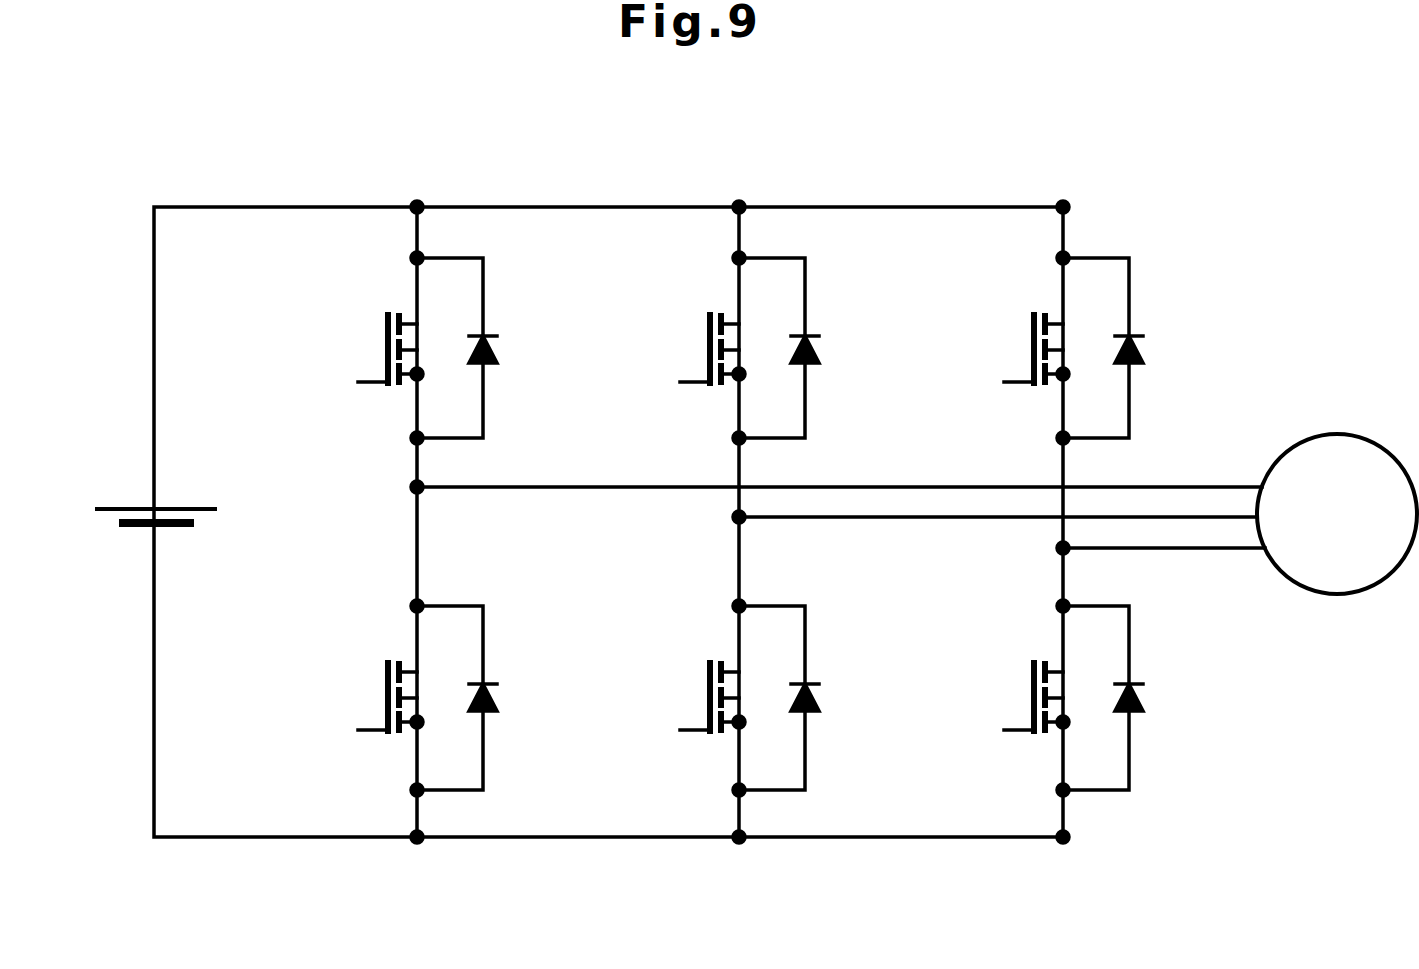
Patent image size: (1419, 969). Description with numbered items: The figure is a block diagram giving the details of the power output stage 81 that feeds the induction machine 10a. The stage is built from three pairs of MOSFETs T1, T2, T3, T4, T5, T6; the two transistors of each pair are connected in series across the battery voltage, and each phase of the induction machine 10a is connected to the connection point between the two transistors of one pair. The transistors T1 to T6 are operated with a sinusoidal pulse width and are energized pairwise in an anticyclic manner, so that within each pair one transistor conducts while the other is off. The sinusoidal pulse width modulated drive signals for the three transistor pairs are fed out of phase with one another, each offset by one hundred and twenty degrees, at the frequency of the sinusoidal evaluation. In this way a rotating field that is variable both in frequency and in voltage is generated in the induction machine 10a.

The power output stage 81 is at (681, 464).
The induction machine 10a is at (1305, 600).
The MOSFET T1 is at (416, 348).
The MOSFET T2 is at (416, 698).
The MOSFET T3 is at (738, 348).
The MOSFET T4 is at (738, 698).
The MOSFET T5 is at (1062, 348).
The MOSFET T6 is at (1062, 698).